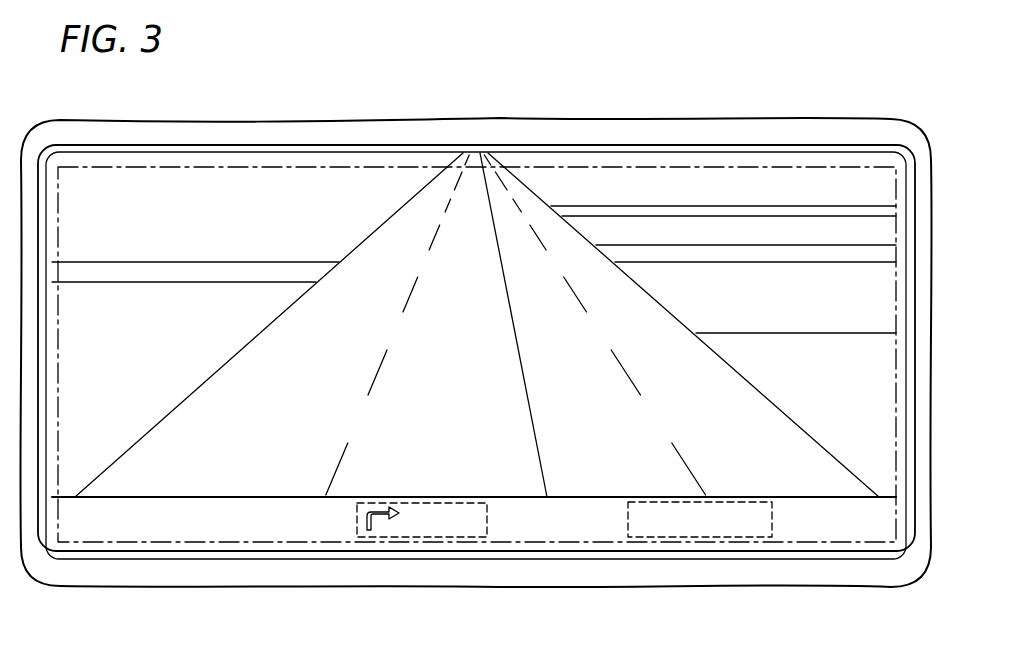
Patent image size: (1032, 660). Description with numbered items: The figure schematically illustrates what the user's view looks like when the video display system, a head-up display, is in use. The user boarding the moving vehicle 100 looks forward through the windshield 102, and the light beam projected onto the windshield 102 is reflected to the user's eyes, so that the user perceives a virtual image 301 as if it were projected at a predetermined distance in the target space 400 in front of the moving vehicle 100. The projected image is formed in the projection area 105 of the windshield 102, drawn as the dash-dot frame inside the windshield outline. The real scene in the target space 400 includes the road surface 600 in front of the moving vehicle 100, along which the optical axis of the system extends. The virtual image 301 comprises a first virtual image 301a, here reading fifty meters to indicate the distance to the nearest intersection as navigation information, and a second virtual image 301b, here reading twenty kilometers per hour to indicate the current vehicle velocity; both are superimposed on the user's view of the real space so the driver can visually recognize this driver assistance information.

The moving vehicle 100 is at (810, 126).
The windshield 102 is at (552, 157).
The projection area 105 is at (333, 167).
The target space 400 is at (448, 321).
The road surface 600 is at (502, 343).
The virtual image 301 is at (572, 561).
The first virtual image 301a is at (430, 537).
The second virtual image 301b is at (688, 537).